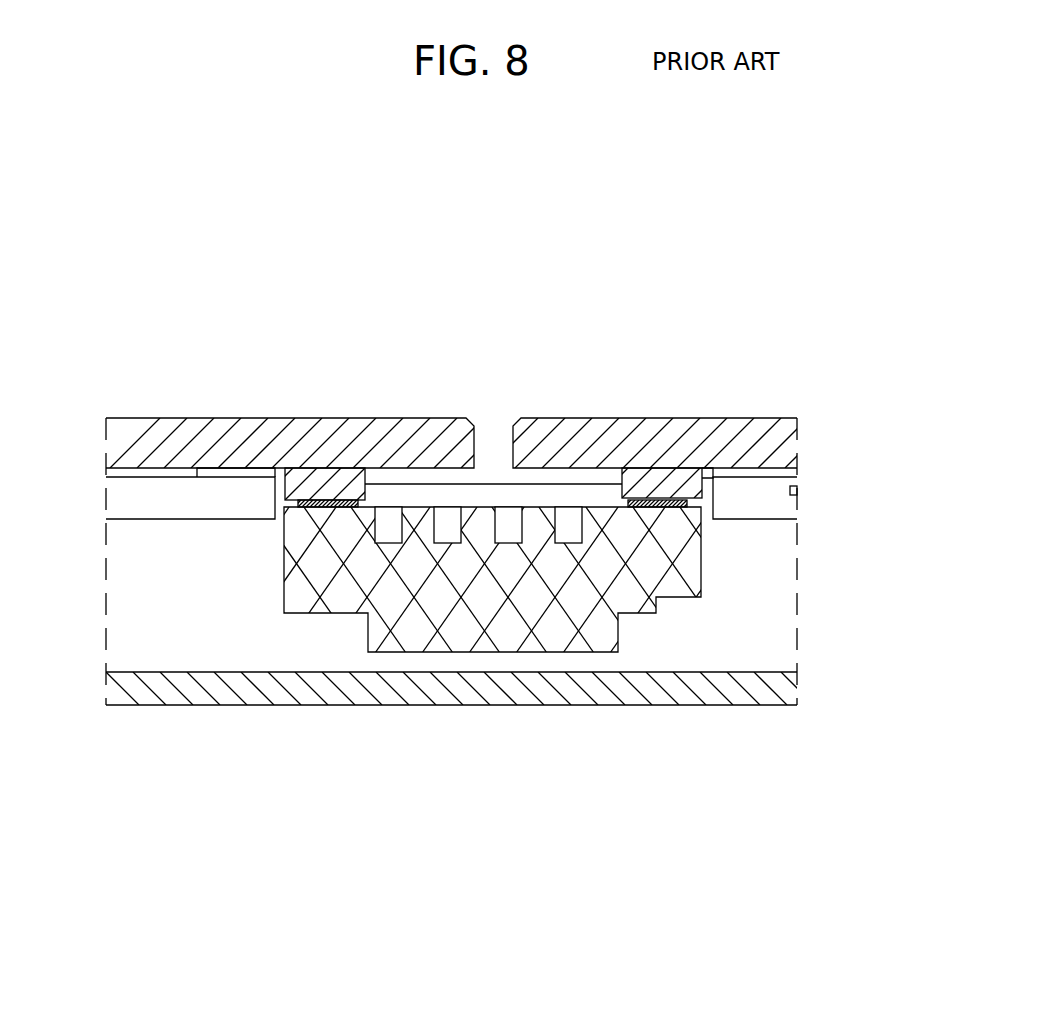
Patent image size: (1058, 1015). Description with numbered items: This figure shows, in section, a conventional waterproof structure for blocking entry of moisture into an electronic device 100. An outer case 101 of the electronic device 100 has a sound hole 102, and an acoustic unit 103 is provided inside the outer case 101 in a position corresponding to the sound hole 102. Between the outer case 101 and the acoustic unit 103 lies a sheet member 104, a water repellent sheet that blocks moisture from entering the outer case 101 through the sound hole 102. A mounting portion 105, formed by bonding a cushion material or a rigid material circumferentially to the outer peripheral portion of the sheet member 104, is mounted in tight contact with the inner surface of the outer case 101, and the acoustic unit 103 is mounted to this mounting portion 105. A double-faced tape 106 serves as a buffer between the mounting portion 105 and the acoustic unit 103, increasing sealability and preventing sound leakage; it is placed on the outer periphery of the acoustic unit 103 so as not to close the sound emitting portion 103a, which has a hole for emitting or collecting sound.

The electronic device 100 is at (468, 554).
The outer case 101 is at (713, 420).
The sound hole 102 is at (512, 450).
The acoustic unit 103 is at (333, 598).
The sound emitting portion 103a is at (510, 495).
The sheet member 104 is at (497, 483).
The mounting portion 105 is at (296, 494).
The double-faced tape 106 is at (297, 510).